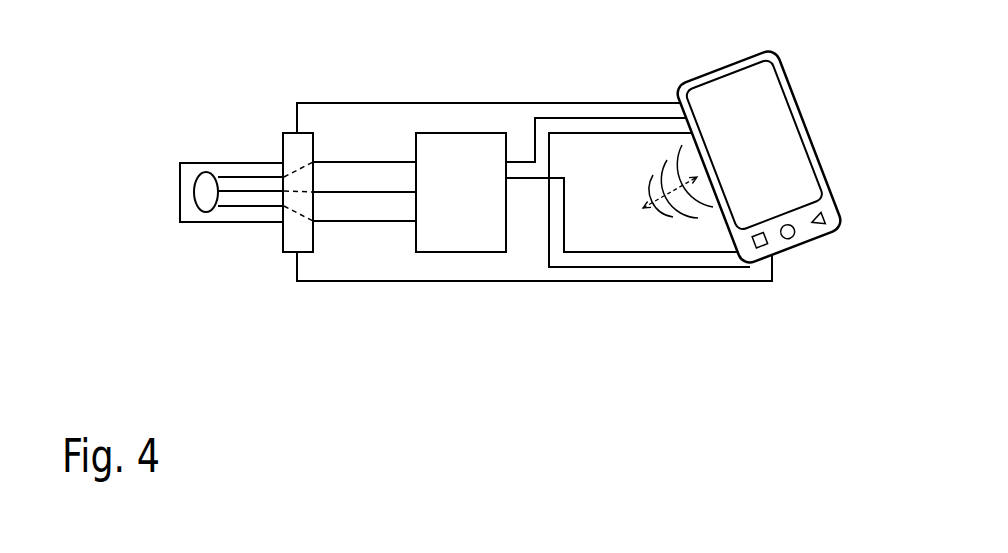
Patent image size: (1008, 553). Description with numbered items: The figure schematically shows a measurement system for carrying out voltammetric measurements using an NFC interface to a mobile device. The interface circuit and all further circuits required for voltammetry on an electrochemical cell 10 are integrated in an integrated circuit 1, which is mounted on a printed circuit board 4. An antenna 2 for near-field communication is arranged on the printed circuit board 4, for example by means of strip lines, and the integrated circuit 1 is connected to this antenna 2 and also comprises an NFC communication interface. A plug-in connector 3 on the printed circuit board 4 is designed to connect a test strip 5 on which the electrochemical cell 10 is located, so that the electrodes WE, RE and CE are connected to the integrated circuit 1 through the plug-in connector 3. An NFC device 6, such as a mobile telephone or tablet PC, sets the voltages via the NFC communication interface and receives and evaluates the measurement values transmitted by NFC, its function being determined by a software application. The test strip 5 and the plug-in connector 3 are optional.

The integrated circuit 1 is at (507, 198).
The antenna 2 is at (576, 118).
The plug-in connector 3 is at (287, 251).
The printed circuit board 4 is at (630, 282).
The test strip 5 is at (178, 224).
The NFC device 6 is at (842, 200).
The electrochemical cell 10 is at (210, 193).